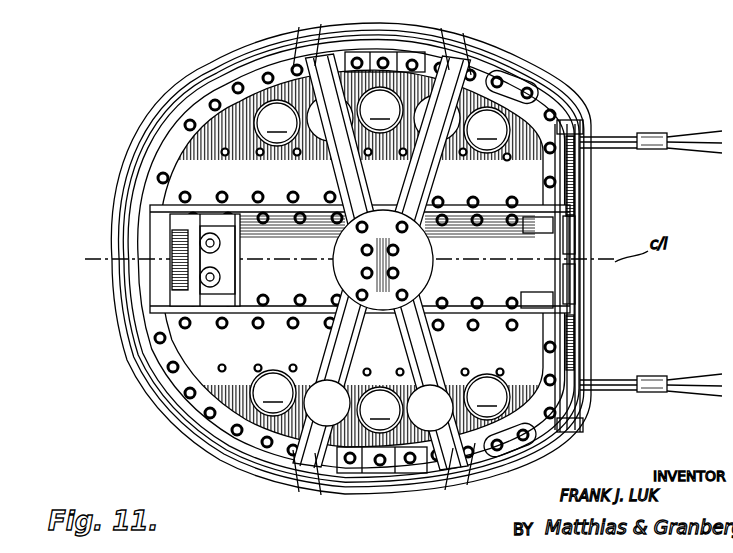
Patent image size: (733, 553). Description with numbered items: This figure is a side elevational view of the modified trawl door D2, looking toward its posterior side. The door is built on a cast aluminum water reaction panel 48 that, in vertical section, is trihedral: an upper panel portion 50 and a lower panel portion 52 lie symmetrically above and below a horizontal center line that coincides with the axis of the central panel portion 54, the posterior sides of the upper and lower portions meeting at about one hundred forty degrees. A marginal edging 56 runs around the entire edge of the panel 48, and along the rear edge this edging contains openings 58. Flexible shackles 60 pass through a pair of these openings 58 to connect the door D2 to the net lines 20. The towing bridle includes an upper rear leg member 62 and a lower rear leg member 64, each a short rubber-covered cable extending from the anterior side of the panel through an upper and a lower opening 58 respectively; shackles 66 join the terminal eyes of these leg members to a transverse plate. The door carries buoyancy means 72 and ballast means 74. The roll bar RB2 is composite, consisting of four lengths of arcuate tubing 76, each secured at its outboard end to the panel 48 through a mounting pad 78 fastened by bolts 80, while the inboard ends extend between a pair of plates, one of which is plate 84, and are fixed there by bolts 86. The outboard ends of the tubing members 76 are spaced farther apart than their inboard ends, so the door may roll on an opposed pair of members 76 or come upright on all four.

The net lines 20 is at (700, 138).
The water reaction panel 48 is at (522, 290).
The upper panel portion 50 is at (190, 116).
The lower panel portion 52 is at (205, 348).
The central panel portion 54 is at (180, 272).
The marginal edging 56 is at (228, 78).
The openings 58 is at (578, 120).
The flexible shackles 60 is at (628, 140).
The upper rear leg member 62 is at (572, 180).
The lower rear leg member 64 is at (575, 332).
The shackles 66 is at (575, 255).
The buoyancy means 72 is at (382, 262).
The ballast means 74 is at (380, 401).
The arcuate tubing 76 is at (410, 167).
The mounting pad 78 is at (311, 38).
The bolts 80 is at (292, 52).
The plate 84 is at (381, 260).
The bolts 86 is at (358, 230).
The trawl door D2 is at (580, 78).
The roll bar RB2 is at (332, 183).